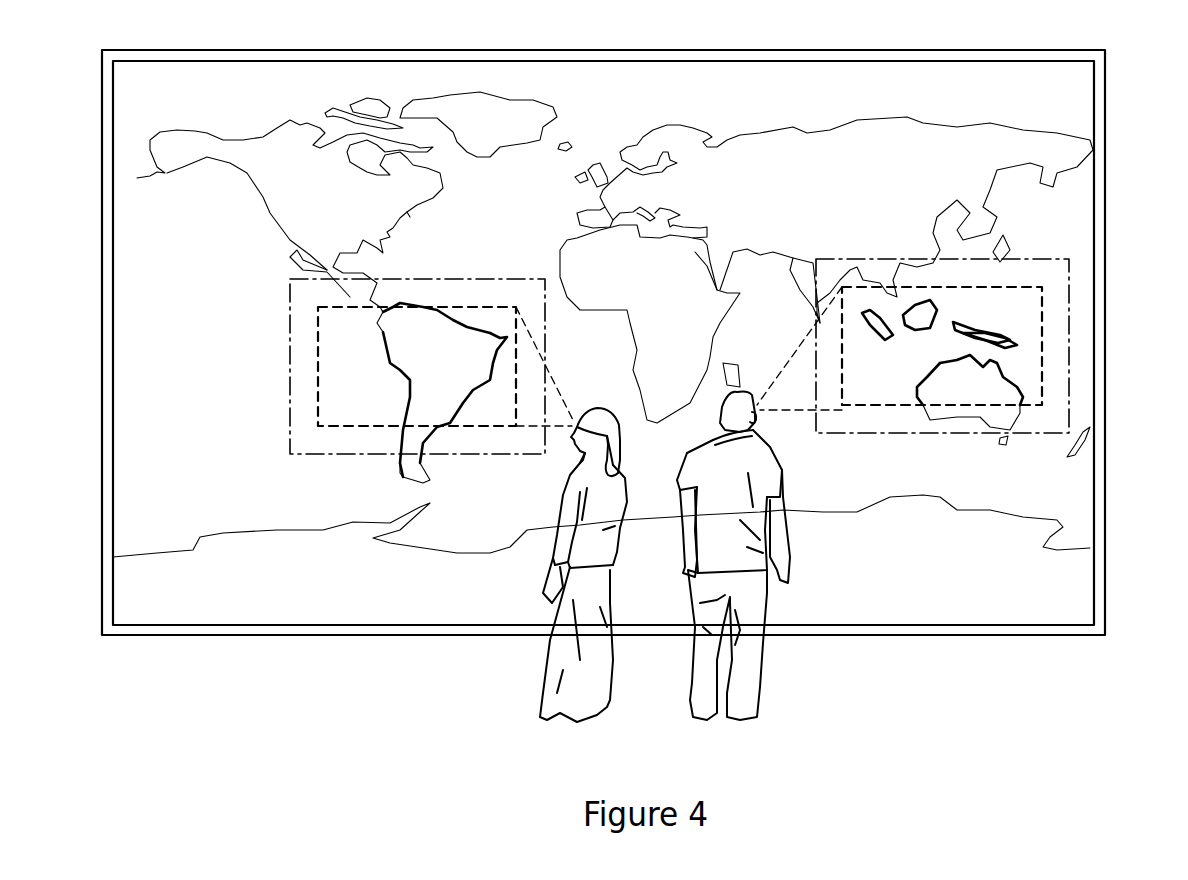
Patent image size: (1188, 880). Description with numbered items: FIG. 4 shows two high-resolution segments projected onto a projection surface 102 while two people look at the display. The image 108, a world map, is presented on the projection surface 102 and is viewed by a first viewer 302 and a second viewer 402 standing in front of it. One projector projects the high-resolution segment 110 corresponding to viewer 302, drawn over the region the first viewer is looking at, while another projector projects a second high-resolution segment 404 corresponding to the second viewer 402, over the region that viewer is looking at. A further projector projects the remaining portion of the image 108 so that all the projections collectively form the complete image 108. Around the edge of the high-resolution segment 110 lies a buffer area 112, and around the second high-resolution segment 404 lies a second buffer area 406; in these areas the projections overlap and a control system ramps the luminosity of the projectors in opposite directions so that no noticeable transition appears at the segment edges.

The projection surface 102 is at (1106, 103).
The image 108 is at (1066, 218).
The high-resolution segment 110 is at (318, 337).
The buffer area 112 is at (485, 279).
The viewer 302 is at (598, 703).
The second viewer 402 is at (752, 706).
The high-resolution segment 404 is at (913, 405).
The second buffer area 406 is at (879, 259).